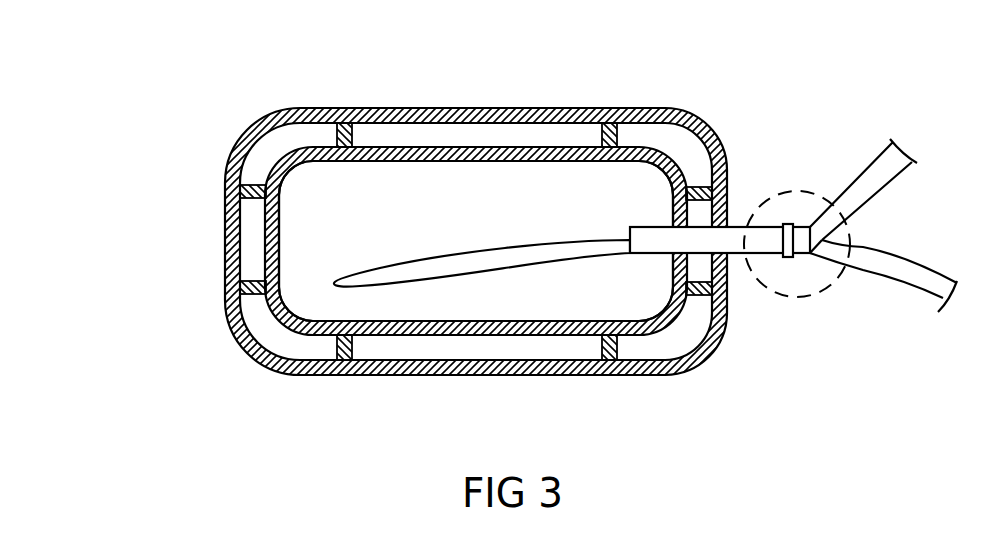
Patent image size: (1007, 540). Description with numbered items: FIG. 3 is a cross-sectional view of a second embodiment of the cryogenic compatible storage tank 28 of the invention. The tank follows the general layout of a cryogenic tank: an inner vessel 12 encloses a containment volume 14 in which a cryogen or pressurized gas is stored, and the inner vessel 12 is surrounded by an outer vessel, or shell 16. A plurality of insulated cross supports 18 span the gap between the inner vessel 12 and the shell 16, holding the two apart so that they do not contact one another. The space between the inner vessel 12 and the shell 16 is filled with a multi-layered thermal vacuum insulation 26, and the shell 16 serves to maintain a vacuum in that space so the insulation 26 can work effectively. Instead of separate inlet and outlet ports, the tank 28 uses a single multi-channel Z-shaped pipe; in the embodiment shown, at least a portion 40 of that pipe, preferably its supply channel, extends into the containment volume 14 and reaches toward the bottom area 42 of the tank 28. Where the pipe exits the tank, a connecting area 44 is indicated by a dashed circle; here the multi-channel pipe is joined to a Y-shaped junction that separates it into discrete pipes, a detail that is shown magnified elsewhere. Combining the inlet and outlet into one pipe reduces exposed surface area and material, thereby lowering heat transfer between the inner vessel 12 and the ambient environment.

The cryogenic compatible storage tank 28 is at (148, 93).
The shell 16 is at (425, 112).
The inner vessel 12 is at (665, 162).
The containment volume 14 is at (363, 203).
The insulated cross supports 18 is at (614, 134).
The multi-layered thermal vacuum insulation 26 is at (527, 135).
The portion of the Z-pipe 40 is at (570, 250).
The bottom area 42 is at (460, 297).
The connecting area 44 is at (792, 190).